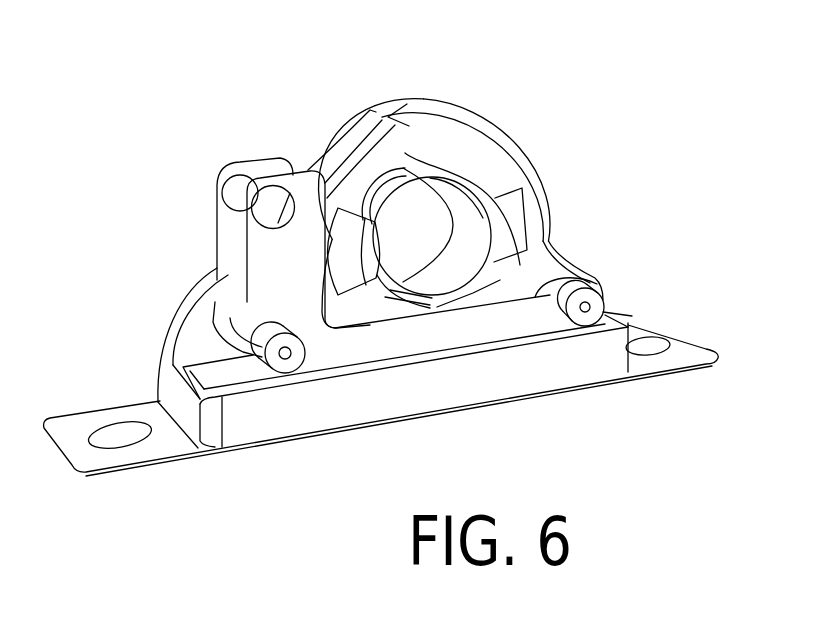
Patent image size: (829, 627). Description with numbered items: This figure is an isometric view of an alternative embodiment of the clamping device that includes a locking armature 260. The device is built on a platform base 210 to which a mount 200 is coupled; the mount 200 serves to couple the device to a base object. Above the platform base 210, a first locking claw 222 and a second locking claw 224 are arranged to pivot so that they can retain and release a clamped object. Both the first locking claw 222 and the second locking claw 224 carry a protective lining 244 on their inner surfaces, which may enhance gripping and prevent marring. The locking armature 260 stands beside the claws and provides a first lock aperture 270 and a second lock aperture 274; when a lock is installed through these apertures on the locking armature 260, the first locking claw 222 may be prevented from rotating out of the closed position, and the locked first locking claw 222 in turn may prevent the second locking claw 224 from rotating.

The mount 200 is at (178, 457).
The platform base 210 is at (593, 352).
The first locking claw 222 is at (370, 163).
The second locking claw 224 is at (483, 146).
The protective lining 244 is at (350, 242).
The locking armature 260 is at (267, 272).
The first lock aperture 270 is at (217, 180).
The second lock aperture 274 is at (258, 194).